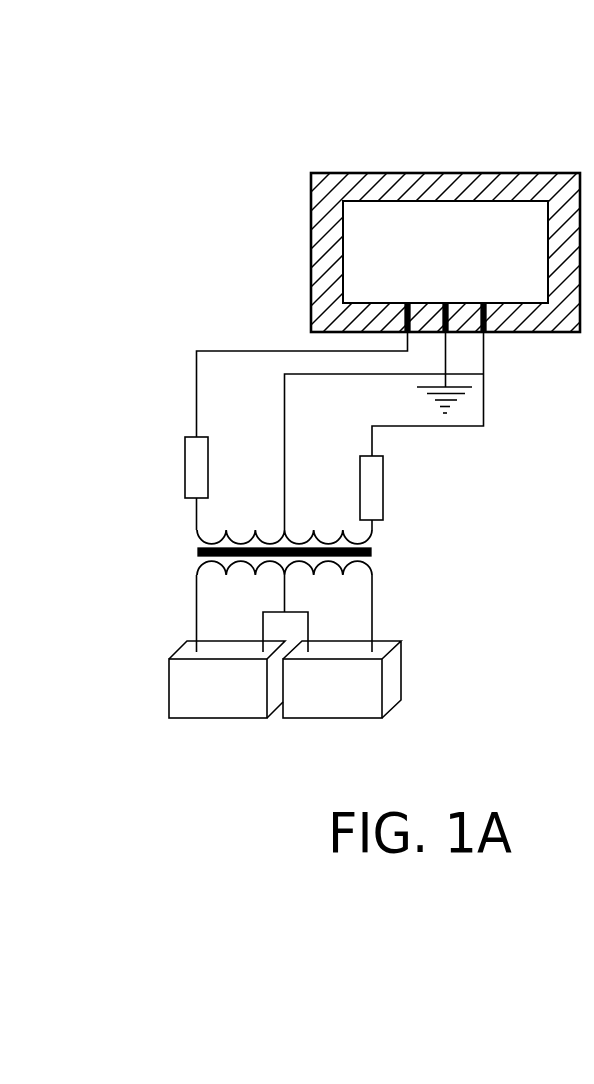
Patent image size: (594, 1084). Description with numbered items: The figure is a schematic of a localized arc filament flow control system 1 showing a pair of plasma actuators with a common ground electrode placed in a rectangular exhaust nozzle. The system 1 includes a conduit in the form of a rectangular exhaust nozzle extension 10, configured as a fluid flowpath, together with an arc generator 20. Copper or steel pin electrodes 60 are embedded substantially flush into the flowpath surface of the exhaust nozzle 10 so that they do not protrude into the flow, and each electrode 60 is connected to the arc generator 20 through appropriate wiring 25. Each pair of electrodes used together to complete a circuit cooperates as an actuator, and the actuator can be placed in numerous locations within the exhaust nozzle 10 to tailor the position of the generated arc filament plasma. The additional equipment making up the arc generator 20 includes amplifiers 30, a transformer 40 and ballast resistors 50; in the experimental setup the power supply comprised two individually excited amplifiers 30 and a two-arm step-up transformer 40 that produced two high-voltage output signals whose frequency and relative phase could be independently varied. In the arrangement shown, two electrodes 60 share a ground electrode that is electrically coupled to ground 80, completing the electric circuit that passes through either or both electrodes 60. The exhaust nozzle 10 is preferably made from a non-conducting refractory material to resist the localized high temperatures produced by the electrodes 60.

The localized arc filament flow control system 1 is at (272, 104).
The rectangular exhaust nozzle extension 10 is at (467, 173).
The arc generator 20 is at (152, 340).
The wiring 25 is at (220, 350).
The amplifiers 30 is at (352, 702).
The transformer 40 is at (375, 552).
The ballast resistors 50 is at (383, 482).
The pin electrodes 60 is at (488, 338).
The ground 80 is at (462, 404).